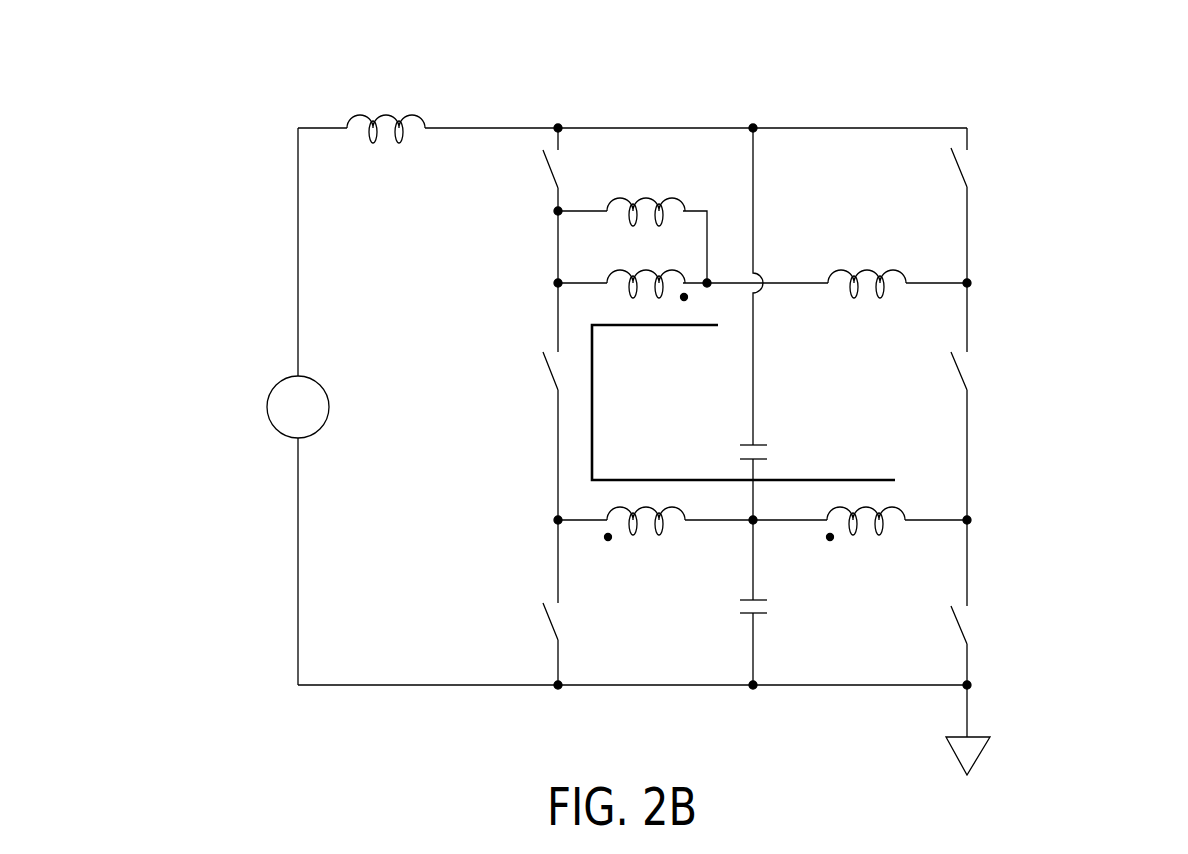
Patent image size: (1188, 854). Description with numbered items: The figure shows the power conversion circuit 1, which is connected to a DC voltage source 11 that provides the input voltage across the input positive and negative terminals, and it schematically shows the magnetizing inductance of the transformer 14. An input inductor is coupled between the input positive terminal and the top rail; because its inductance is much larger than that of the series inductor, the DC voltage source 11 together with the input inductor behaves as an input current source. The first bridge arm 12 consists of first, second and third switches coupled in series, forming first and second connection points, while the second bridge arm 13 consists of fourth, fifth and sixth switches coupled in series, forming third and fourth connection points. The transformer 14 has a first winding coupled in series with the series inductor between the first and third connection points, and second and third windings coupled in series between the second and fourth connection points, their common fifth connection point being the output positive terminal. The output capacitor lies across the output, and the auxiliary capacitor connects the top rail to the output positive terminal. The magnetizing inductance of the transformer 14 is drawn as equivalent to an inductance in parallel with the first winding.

The power conversion circuit 1 is at (1166, 92).
The DC voltage source 11 is at (252, 363).
The first bridge arm 12 is at (567, 99).
The second bridge arm 13 is at (968, 108).
The transformer 14 is at (652, 362).